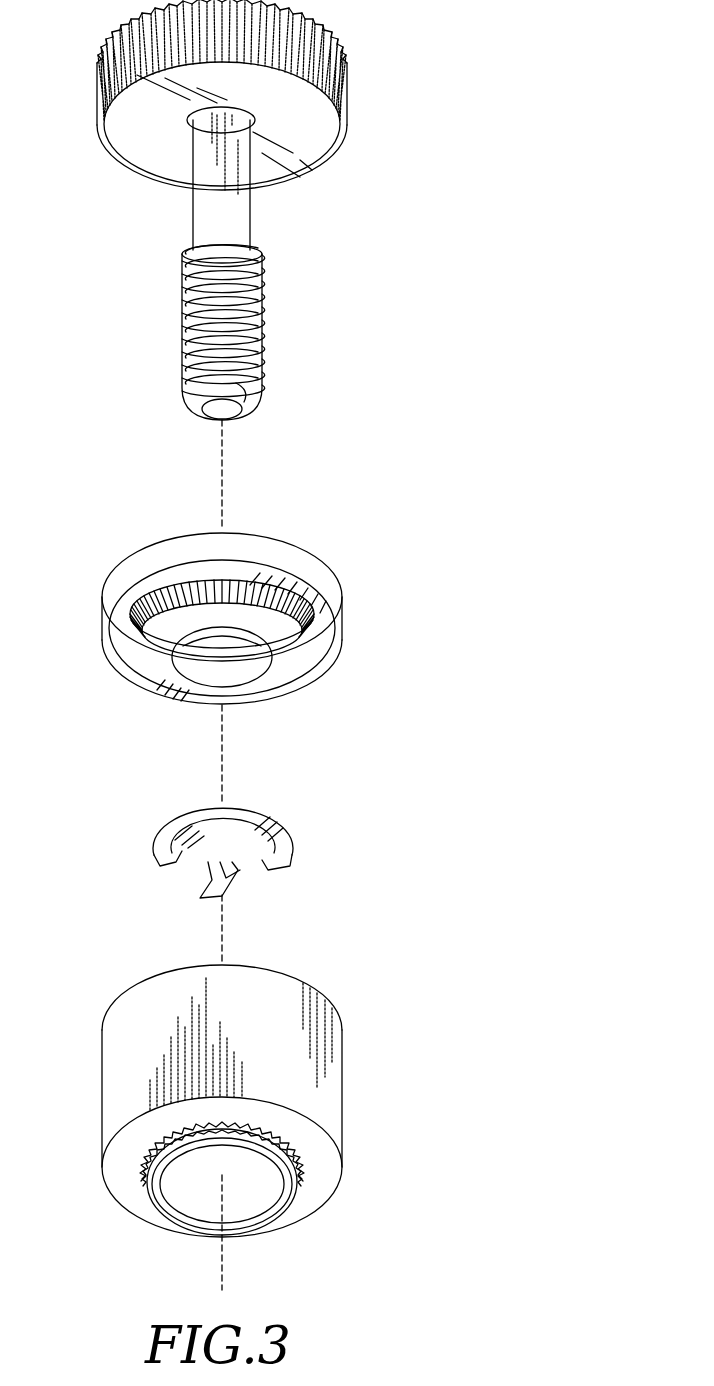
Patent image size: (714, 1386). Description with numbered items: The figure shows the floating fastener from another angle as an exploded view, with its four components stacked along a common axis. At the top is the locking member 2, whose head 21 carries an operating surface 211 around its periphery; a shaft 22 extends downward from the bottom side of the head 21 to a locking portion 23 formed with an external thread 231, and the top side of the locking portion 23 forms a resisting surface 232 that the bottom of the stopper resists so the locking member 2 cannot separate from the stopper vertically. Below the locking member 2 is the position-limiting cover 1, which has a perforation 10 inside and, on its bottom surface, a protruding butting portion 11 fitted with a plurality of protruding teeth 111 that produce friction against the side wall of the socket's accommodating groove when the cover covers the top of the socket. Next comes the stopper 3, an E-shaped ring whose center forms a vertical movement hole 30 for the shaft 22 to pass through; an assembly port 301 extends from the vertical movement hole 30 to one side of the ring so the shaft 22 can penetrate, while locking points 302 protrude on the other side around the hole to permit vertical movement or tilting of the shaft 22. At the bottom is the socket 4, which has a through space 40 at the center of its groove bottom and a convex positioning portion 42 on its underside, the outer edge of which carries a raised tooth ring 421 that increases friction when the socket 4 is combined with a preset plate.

The position-limiting cover 1 is at (362, 599).
The perforation 10 is at (243, 651).
The protruding butting portion 11 is at (153, 655).
The protruding teeth 111 is at (305, 627).
The locking member 2 is at (102, 187).
The head 21 is at (326, 140).
The operating surface 211 is at (327, 66).
The shaft 22 is at (205, 214).
The locking portion 23 is at (345, 324).
The external thread 231 is at (243, 333).
The resisting surface 232 is at (245, 252).
The stopper 3 is at (170, 809).
The vertical movement hole 30 is at (236, 867).
The assembly port 301 is at (183, 882).
The locking points 302 is at (172, 857).
The socket 4 is at (365, 1057).
The through space 40 is at (192, 1186).
The positioning portion 42 is at (287, 1196).
The raised tooth ring 421 is at (295, 1150).